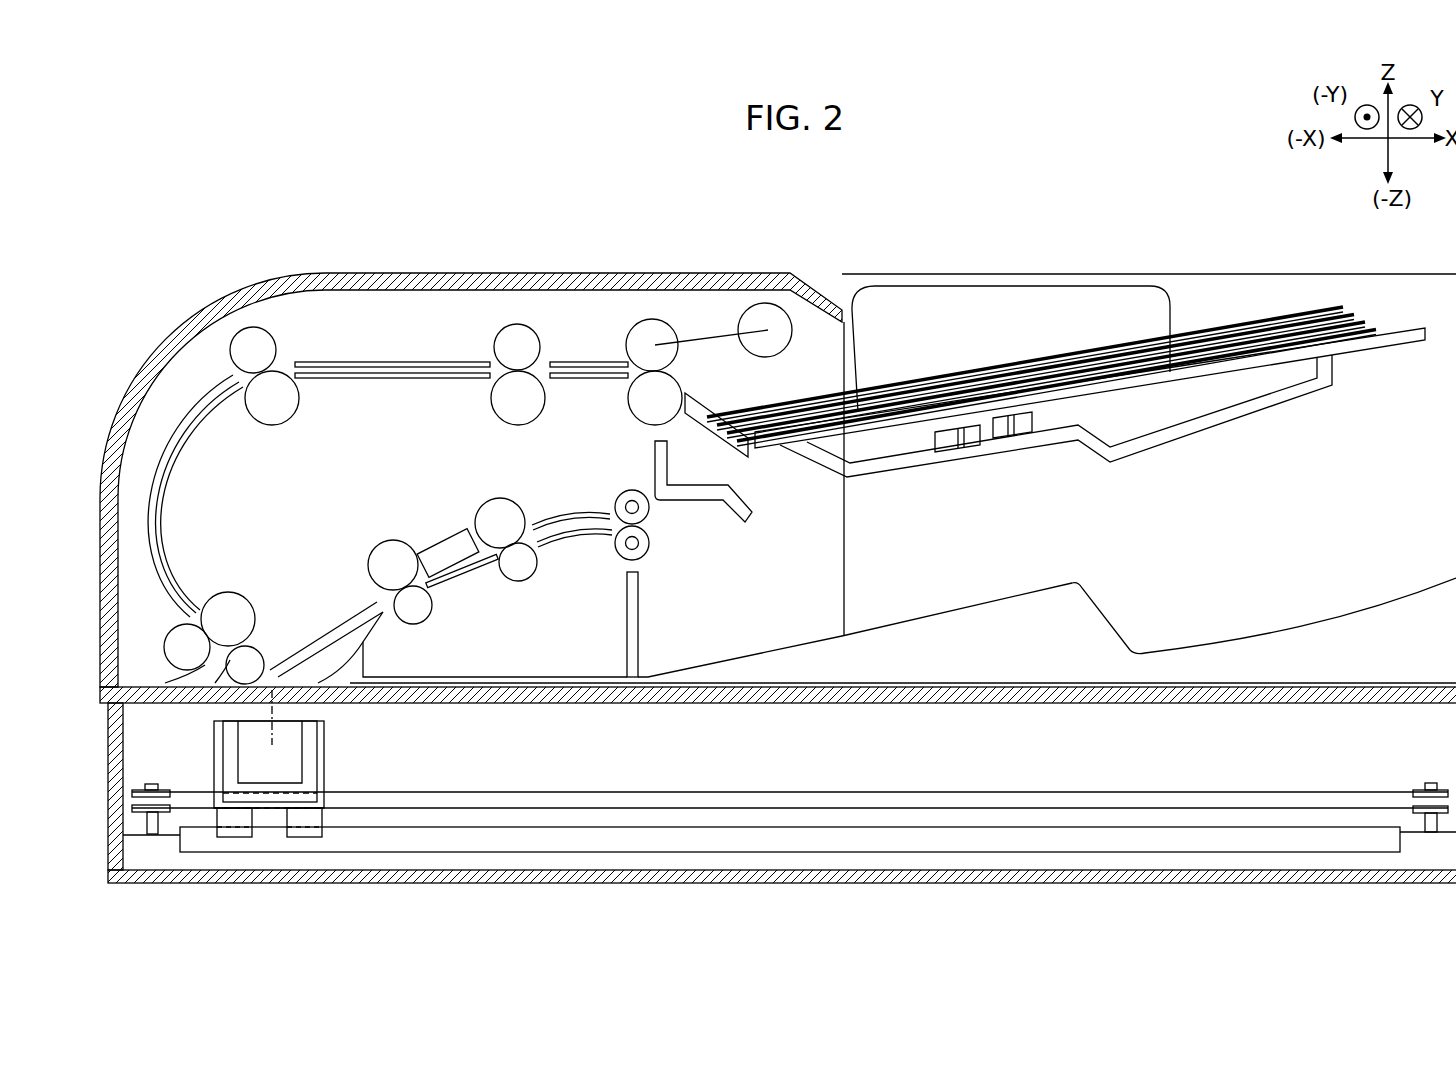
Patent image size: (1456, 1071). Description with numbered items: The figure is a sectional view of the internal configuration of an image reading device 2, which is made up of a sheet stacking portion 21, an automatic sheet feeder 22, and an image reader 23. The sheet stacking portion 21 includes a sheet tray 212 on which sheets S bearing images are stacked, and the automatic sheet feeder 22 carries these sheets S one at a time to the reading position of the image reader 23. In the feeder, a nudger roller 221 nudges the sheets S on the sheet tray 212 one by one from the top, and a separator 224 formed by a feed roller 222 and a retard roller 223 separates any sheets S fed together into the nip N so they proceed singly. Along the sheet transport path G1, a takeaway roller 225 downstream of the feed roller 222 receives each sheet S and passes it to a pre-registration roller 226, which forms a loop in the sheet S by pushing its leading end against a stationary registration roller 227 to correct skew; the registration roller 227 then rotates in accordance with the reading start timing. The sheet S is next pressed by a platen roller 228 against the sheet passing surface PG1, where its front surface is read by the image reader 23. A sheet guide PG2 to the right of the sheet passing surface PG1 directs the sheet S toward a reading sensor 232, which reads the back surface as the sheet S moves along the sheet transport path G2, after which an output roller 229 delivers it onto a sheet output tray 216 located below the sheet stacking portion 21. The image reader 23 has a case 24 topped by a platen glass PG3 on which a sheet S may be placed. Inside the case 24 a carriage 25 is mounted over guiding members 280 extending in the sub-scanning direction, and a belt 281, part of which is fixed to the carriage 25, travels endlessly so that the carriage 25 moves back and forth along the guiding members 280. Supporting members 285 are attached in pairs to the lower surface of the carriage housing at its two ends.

The image reading device 2 is at (172, 288).
The sheet stacking portion 21 is at (1010, 268).
The automatic sheet feeder 22 is at (490, 520).
The image reader 23 is at (790, 760).
The case 24 is at (518, 880).
The carriage 25 is at (325, 768).
The sheet tray 212 is at (1205, 373).
The sheet output tray 216 is at (1280, 650).
The nudger roller 221 is at (770, 320).
The feed roller 222 is at (658, 338).
The retard roller 223 is at (652, 392).
The separator 224 is at (649, 357).
The takeaway roller 225 is at (487, 333).
The pre-registration roller 226 is at (288, 335).
The registration roller 227 is at (210, 592).
The platen roller 228 is at (250, 658).
The output roller 229 is at (615, 537).
The reading sensor 232 is at (455, 550).
The guiding members 280 is at (425, 835).
The belt 281 is at (585, 800).
The supporting members 285 is at (236, 835).
The sheet transport path G1 is at (455, 360).
The sheet transport path G2 is at (560, 508).
The nip N is at (630, 372).
The sheet S is at (1195, 325).
The sheet passing surface PG1 is at (253, 694).
The sheet guide PG2 is at (350, 660).
The platen glass PG3 is at (1000, 690).